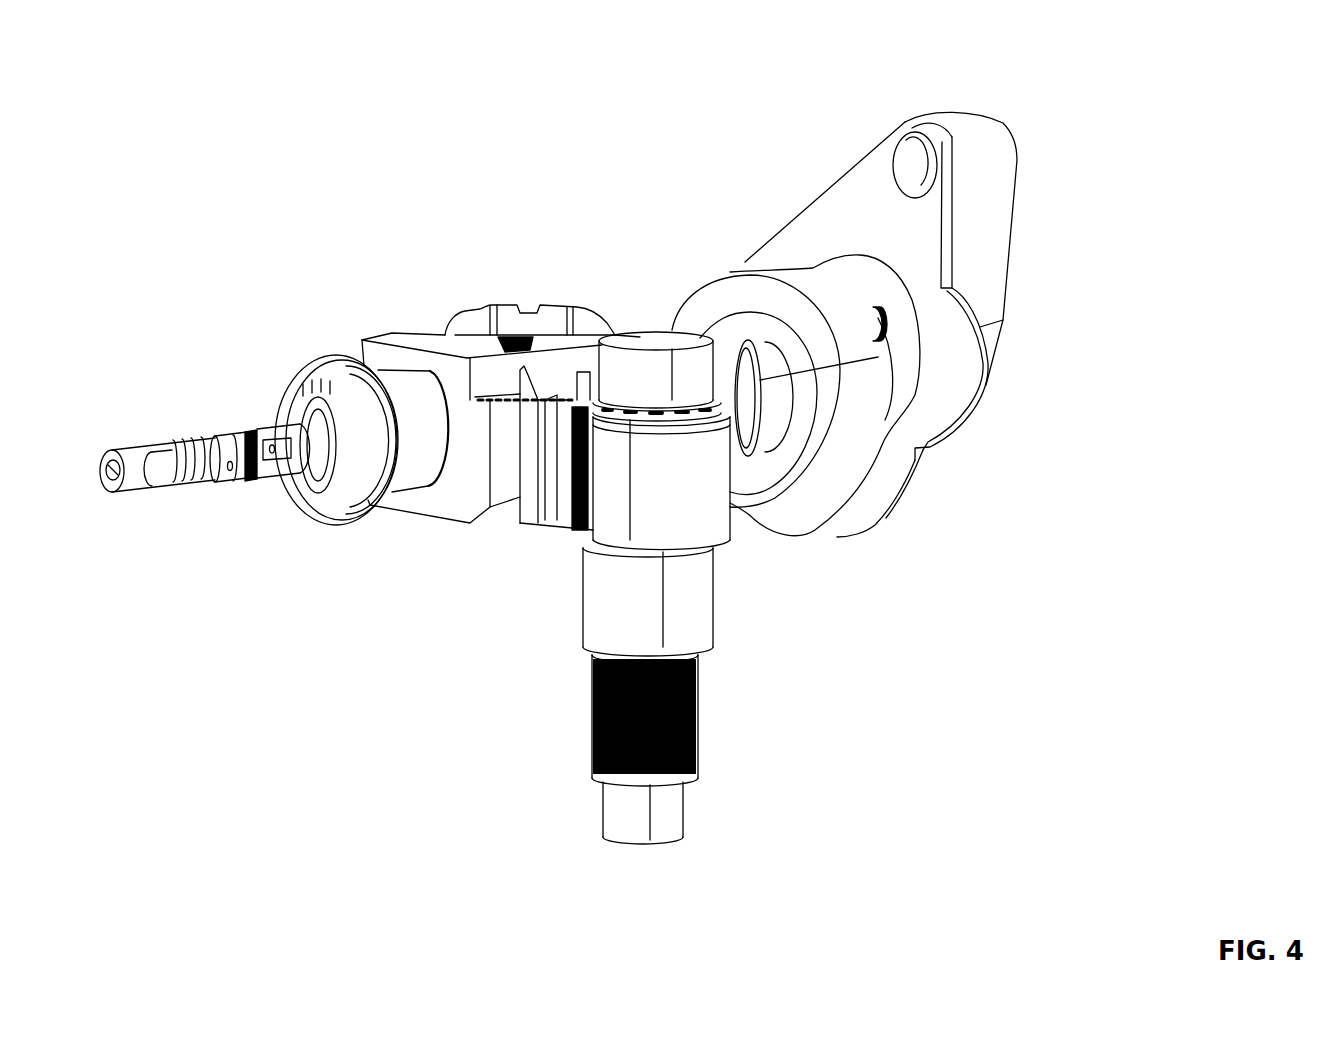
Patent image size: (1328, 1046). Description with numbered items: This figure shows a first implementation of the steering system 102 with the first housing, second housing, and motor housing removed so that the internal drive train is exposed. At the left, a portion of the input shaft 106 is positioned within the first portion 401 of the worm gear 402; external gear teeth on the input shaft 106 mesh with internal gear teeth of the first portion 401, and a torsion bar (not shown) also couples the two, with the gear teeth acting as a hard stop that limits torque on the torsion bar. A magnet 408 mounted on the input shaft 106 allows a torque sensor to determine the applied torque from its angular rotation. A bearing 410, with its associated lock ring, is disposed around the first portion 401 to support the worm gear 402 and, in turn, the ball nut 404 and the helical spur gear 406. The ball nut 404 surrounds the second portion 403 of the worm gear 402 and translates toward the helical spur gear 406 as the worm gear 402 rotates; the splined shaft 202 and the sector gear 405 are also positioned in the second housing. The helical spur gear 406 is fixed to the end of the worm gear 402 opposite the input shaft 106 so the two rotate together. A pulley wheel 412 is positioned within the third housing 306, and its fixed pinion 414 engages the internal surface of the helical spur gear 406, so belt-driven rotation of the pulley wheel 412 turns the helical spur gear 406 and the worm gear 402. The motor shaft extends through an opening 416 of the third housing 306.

The steering system 102 is at (1090, 76).
The input shaft 106 is at (113, 445).
The splined shaft 202 is at (700, 714).
The third housing 306 is at (1008, 245).
The first portion of the worm gear 401 is at (268, 412).
The worm gear 402 is at (268, 403).
The second portion of the worm gear 403 is at (445, 473).
The ball nut 404 is at (440, 333).
The sector gear 405 is at (556, 520).
The helical spur gear 406 is at (672, 332).
The magnet 408 is at (230, 472).
The bearing 410 is at (328, 524).
The pulley wheel 412 is at (867, 263).
The pinion of the pulley wheel 414 is at (882, 323).
The opening 416 is at (917, 170).